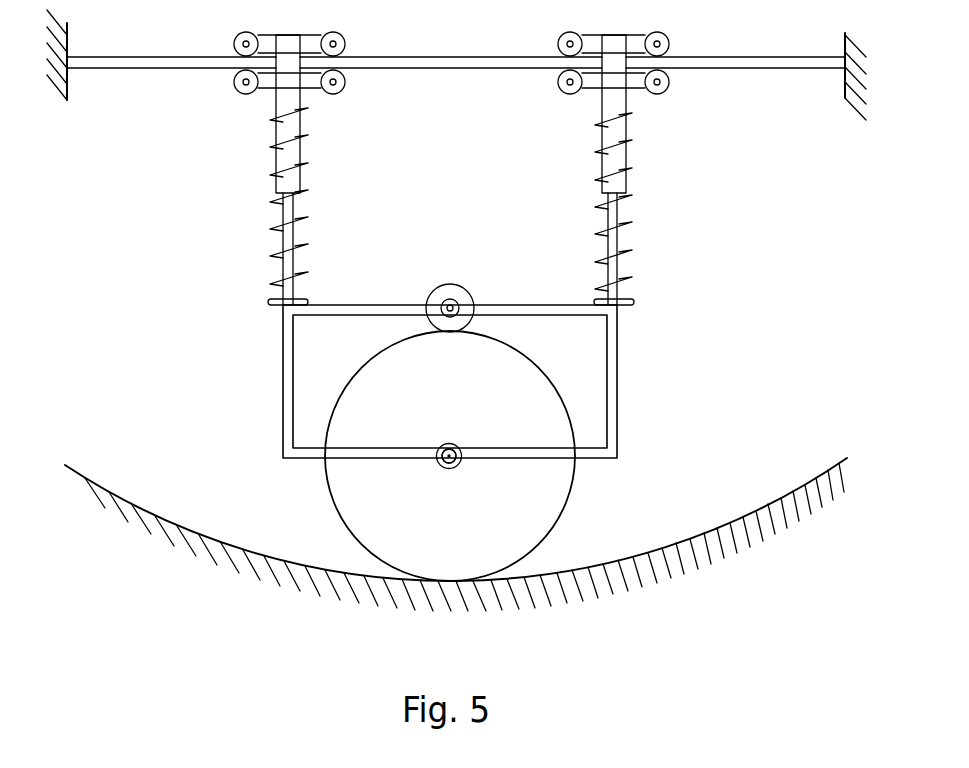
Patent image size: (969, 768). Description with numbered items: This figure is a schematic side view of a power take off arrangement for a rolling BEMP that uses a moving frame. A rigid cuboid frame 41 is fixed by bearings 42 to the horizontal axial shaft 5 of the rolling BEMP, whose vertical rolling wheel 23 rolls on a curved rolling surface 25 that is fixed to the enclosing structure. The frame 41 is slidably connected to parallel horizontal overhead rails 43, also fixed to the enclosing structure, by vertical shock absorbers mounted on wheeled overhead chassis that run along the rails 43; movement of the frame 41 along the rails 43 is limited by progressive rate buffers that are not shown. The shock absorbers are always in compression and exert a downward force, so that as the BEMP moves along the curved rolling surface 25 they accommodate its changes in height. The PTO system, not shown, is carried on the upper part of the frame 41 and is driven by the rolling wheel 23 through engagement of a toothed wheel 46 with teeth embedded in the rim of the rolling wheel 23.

The axial shaft 5 is at (460, 465).
The rolling wheel 23 is at (573, 482).
The rolling surface 25 is at (168, 522).
The rigid cuboid frame 41 is at (617, 367).
The bearings 42 is at (457, 440).
The overhead rails 43 is at (735, 72).
The toothed wheel 46 is at (452, 283).